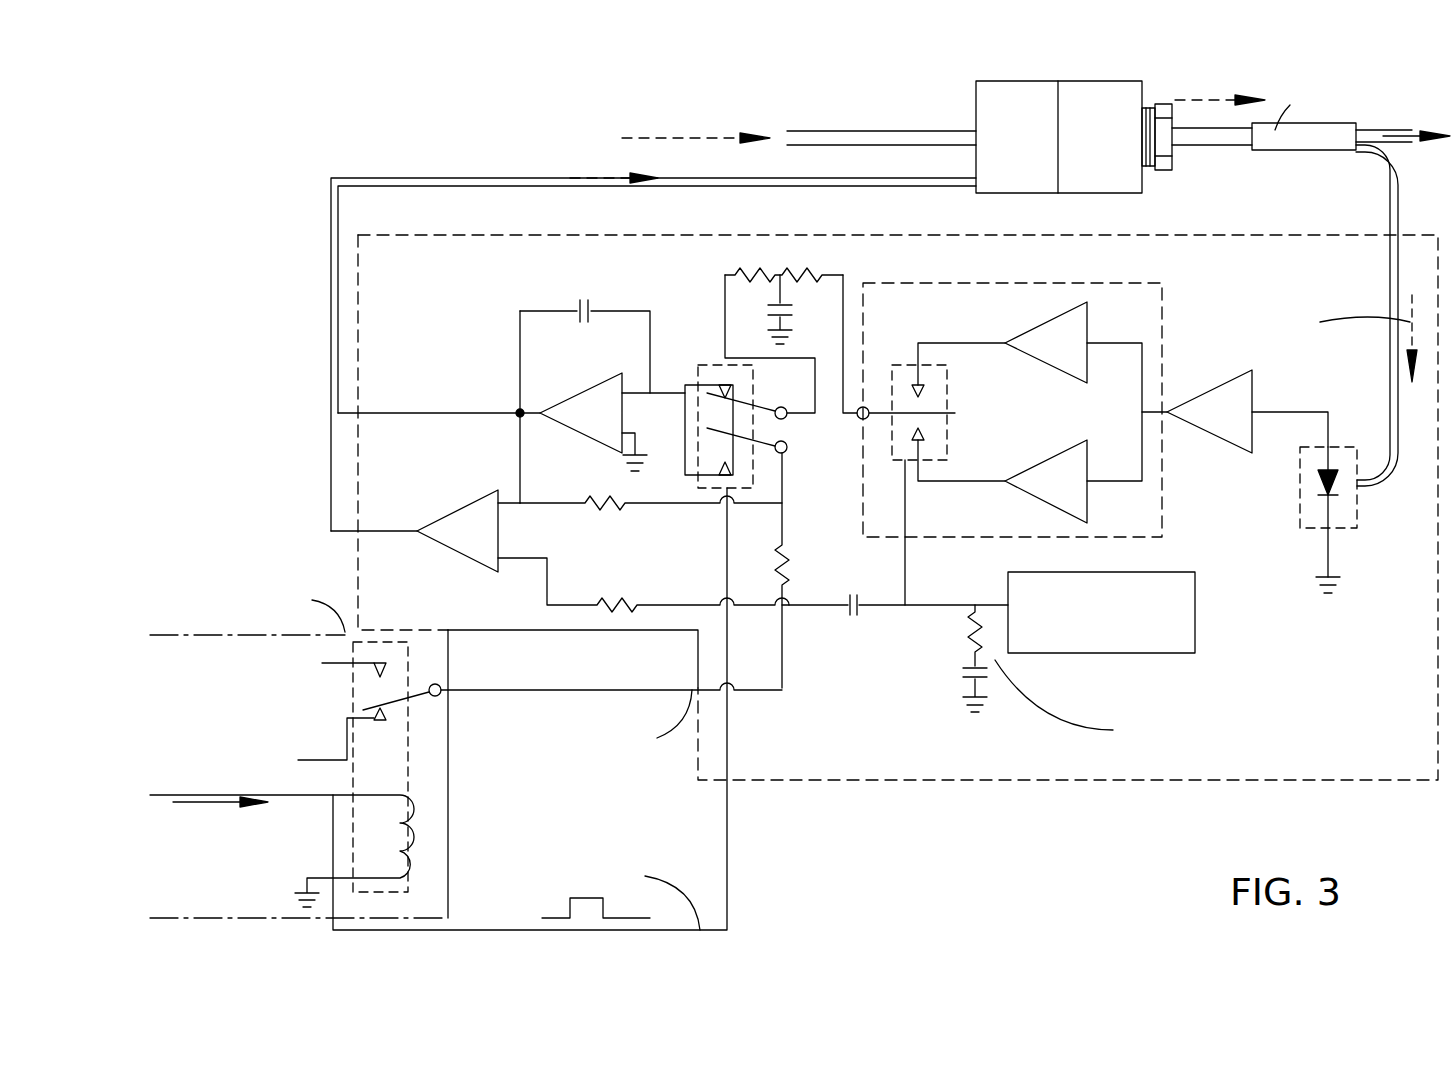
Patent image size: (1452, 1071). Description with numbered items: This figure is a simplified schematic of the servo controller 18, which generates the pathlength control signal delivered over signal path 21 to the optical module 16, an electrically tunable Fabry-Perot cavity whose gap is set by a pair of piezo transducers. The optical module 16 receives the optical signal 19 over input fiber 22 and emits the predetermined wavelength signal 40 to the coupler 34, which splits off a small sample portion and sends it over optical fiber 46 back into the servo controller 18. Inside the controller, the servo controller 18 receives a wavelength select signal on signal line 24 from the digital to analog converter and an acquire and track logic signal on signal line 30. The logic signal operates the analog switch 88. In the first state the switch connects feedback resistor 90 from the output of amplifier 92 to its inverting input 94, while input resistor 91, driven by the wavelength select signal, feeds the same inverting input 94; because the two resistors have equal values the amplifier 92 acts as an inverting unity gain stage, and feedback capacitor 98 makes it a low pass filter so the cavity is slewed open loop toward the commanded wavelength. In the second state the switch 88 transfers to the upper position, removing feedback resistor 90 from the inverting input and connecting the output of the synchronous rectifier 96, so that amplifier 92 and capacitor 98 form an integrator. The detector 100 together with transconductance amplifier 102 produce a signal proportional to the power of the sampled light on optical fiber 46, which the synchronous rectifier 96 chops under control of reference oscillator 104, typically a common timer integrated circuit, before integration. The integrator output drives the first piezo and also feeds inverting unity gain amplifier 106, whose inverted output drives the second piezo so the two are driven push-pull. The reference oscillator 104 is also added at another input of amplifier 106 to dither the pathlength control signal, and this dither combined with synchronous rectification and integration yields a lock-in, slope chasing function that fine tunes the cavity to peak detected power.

The optical module 16 is at (995, 95).
The servo controller 18 is at (414, 314).
The optical signal 19 is at (655, 138).
The signal path 21 is at (740, 178).
The input fiber 22 is at (865, 140).
The signal line 24 is at (507, 692).
The signal line 30 is at (727, 790).
The coupler 34 is at (1270, 150).
The predetermined wavelength signal 40 is at (1260, 88).
The optical fiber 46 is at (1392, 380).
The analog switch 88 is at (720, 363).
The feedback resistor 90 is at (620, 510).
The input resistor 91 is at (787, 558).
The amplifier 92 is at (588, 425).
The inverting input 94 is at (628, 387).
The synchronous rectifier 96 is at (929, 315).
The feedback capacitor 98 is at (583, 300).
The detector 100 is at (1313, 515).
The transconductance amplifier 102 is at (1215, 395).
The reference oscillator 104 is at (1053, 570).
The inverting unity gain amplifier 106 is at (473, 505).